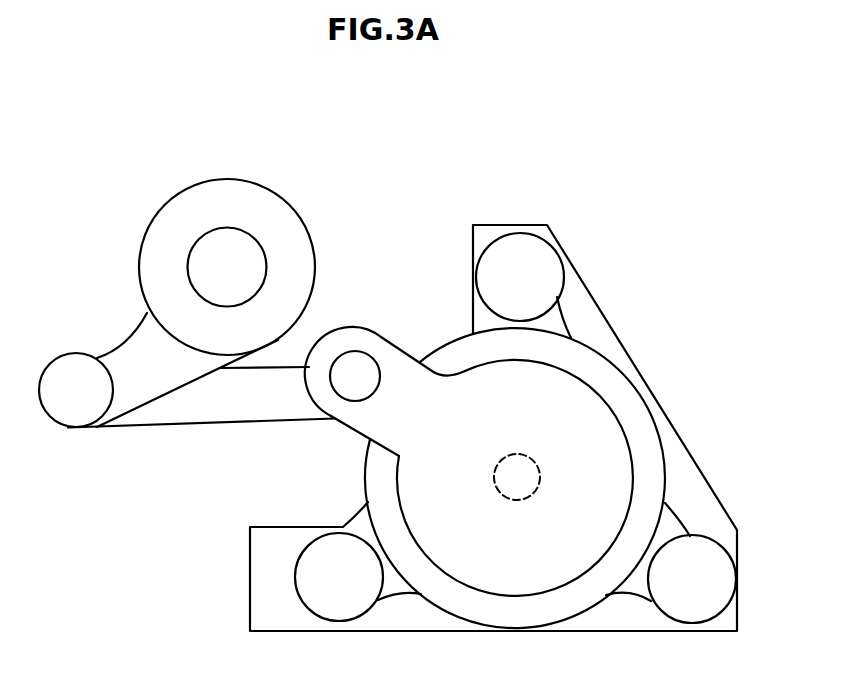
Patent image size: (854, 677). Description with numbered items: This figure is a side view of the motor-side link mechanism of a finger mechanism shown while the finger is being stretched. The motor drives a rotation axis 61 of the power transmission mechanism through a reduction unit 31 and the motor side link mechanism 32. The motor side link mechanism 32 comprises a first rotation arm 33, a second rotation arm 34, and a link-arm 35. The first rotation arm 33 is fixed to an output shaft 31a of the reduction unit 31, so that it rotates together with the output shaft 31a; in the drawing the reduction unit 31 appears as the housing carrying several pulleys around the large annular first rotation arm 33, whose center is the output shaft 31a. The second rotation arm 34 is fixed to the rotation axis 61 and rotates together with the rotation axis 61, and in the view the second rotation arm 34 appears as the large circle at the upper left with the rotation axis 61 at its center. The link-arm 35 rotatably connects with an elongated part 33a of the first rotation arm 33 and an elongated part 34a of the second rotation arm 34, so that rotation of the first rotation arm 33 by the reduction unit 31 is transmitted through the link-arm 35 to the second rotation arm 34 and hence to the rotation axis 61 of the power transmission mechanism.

The reduction unit 31 is at (557, 240).
The output shaft 31a is at (533, 462).
The motor side link mechanism 32 is at (187, 342).
The first rotation arm 33 is at (438, 392).
The elongated part 33a is at (355, 330).
The second rotation arm 34 is at (262, 207).
The elongated part 34a is at (75, 398).
The link-arm 35 is at (220, 404).
The rotation axis 61 is at (212, 262).